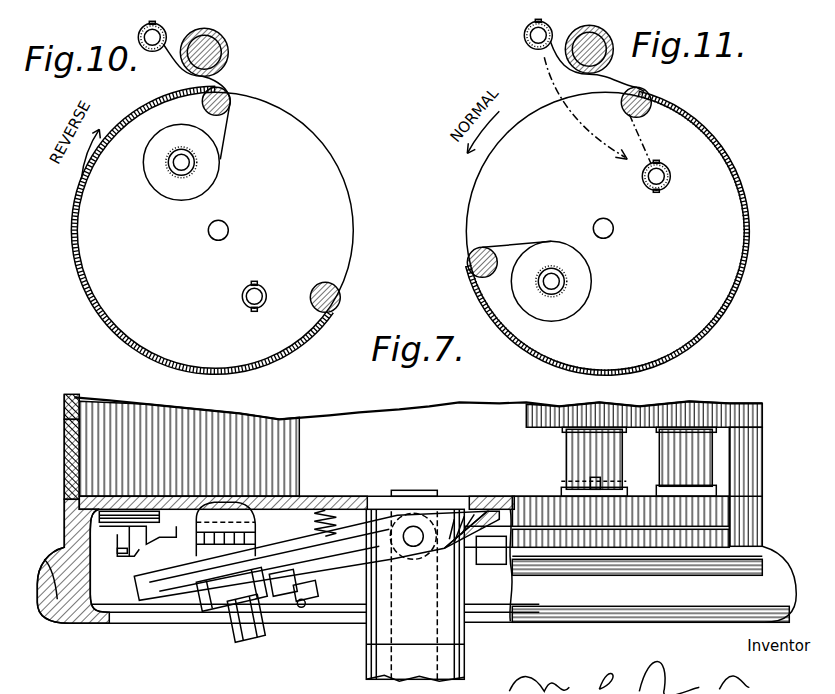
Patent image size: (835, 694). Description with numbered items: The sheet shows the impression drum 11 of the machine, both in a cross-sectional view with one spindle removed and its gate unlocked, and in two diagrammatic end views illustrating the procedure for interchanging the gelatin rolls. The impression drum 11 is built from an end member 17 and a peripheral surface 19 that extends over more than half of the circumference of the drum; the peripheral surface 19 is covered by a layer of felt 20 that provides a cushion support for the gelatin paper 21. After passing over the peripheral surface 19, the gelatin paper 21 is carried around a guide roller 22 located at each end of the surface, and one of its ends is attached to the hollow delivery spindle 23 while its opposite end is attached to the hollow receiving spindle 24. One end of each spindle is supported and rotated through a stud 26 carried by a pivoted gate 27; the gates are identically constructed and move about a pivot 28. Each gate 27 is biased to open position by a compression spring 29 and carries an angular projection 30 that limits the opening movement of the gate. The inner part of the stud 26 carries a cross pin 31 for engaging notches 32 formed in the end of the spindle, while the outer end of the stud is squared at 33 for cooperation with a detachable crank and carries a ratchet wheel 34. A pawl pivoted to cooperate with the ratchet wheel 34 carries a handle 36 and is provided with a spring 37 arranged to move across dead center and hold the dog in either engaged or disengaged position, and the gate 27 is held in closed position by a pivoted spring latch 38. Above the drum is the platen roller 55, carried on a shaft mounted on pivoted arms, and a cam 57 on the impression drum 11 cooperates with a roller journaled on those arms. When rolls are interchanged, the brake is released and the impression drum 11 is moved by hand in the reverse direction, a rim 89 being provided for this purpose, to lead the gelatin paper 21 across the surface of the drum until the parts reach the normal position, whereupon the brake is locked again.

In FIG. 10, the impression drum 11 is at (215, 230).
In FIG. 11, the impression drum 11 is at (605, 231).
In FIG. 7, the impression drum 11 is at (733, 560).
In FIG. 7, the end member 17 is at (352, 503).
In FIG. 10, the peripheral surface 19 is at (102, 312).
In FIG. 11, the peripheral surface 19 is at (742, 282).
In FIG. 7, the peripheral surface 19 is at (80, 420).
In FIG. 7, the layer of felt 20 is at (65, 447).
In FIG. 10, the gelatin paper 21 is at (228, 135).
In FIG. 11, the gelatin paper 21 is at (512, 247).
In FIG. 7, the gelatin paper 21 is at (65, 403).
In FIG. 10, the guide roller 22 is at (205, 99).
In FIG. 11, the guide roller 22 is at (648, 112).
In FIG. 7, the guide roller 22 is at (678, 435).
In FIG. 10, the hollow delivery spindle 23 is at (164, 32).
In FIG. 11, the hollow delivery spindle 23 is at (525, 35).
In FIG. 10, the hollow receiving spindle 24 is at (178, 176).
In FIG. 11, the hollow receiving spindle 24 is at (566, 285).
In FIG. 7, the hollow receiving spindle 24 is at (595, 435).
In FIG. 7, the stud 26 is at (235, 503).
In FIG. 7, the pivoted gate 27 is at (305, 503).
In FIG. 7, the pivot 28 is at (413, 527).
In FIG. 7, the compression spring 29 is at (332, 503).
In FIG. 7, the angular projection 30 is at (457, 507).
In FIG. 7, the cross pin 31 is at (262, 515).
In FIG. 7, the notches 32 is at (595, 478).
In FIG. 7, the squared end 33 is at (247, 632).
In FIG. 7, the ratchet wheel 34 is at (200, 608).
In FIG. 7, the handle 36 is at (327, 605).
In FIG. 7, the spring 37 is at (300, 600).
In FIG. 7, the pivoted spring latch 38 is at (128, 552).
In FIG. 10, the platen roller 55 is at (230, 52).
In FIG. 11, the platen roller 55 is at (614, 55).
In FIG. 7, the cam 57 is at (710, 513).
In FIG. 7, the rim 89 is at (45, 572).